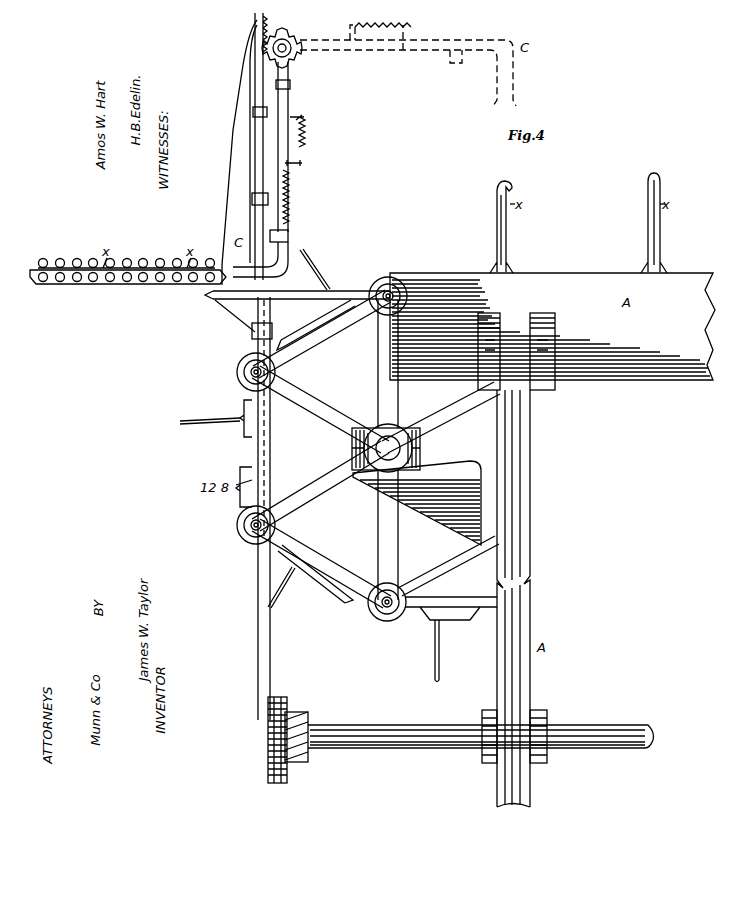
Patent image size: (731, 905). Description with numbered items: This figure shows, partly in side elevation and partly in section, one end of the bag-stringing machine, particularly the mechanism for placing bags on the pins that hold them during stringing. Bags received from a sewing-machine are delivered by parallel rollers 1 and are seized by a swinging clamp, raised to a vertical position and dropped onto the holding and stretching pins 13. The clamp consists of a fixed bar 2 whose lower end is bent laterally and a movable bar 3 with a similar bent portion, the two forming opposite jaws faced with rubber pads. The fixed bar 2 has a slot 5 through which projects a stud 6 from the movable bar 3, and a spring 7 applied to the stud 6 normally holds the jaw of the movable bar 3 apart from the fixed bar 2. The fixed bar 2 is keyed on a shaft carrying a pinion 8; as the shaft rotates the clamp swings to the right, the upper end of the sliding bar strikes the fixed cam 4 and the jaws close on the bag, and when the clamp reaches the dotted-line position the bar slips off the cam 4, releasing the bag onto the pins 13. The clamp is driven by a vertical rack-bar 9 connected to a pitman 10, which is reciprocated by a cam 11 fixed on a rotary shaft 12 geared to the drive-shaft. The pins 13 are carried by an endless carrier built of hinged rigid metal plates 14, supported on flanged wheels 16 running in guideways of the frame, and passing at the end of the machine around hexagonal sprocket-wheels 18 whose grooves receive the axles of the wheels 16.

The parallel rollers 1 is at (129, 281).
The fixed bar 2 is at (290, 218).
The movable bar 3 is at (265, 200).
The fixed cam 4 is at (293, 52).
The slot 5 is at (291, 189).
The stud 6 is at (304, 160).
The spring 7 is at (306, 139).
The pinion 8 is at (290, 38).
The rack-bar 9 is at (255, 45).
The pitman 10 is at (258, 576).
The cam 11 is at (268, 750).
The rotary shaft 12 is at (469, 733).
The holding and stretching pins 13 is at (497, 242).
The rigid metal plates 14 is at (310, 318).
The flanged wheels 16 is at (392, 272).
The sprocket-wheels 18 is at (332, 426).